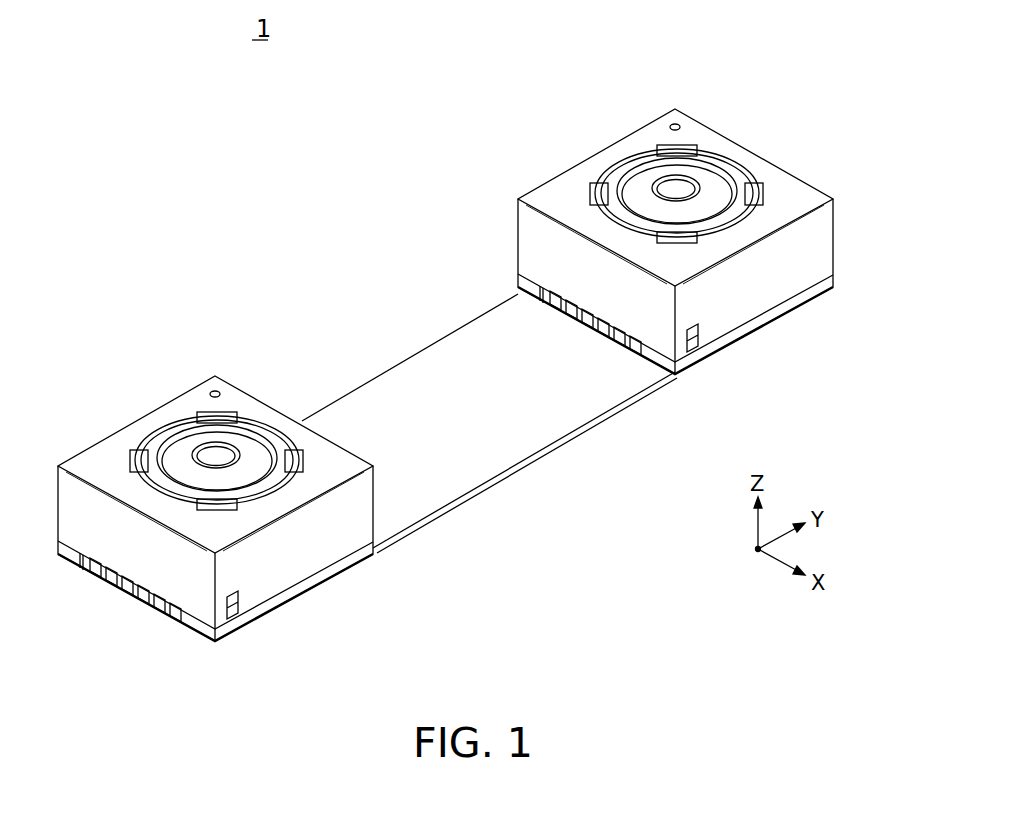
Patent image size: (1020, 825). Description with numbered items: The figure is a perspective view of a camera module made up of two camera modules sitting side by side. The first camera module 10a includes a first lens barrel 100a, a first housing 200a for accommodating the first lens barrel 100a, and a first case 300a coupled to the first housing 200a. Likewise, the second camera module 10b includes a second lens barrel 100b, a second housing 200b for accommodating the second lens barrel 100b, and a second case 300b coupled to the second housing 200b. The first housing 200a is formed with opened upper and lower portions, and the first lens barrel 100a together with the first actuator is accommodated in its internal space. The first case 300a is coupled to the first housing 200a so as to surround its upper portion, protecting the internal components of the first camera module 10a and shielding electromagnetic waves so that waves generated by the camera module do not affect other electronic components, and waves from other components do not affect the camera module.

The first camera module 10a is at (245, 476).
The second camera module 10b is at (703, 209).
The first lens barrel 100a is at (182, 447).
The second lens barrel 100b is at (675, 159).
The first housing 200a is at (343, 560).
The second housing 200b is at (703, 324).
The first case 300a is at (105, 457).
The second case 300b is at (675, 241).